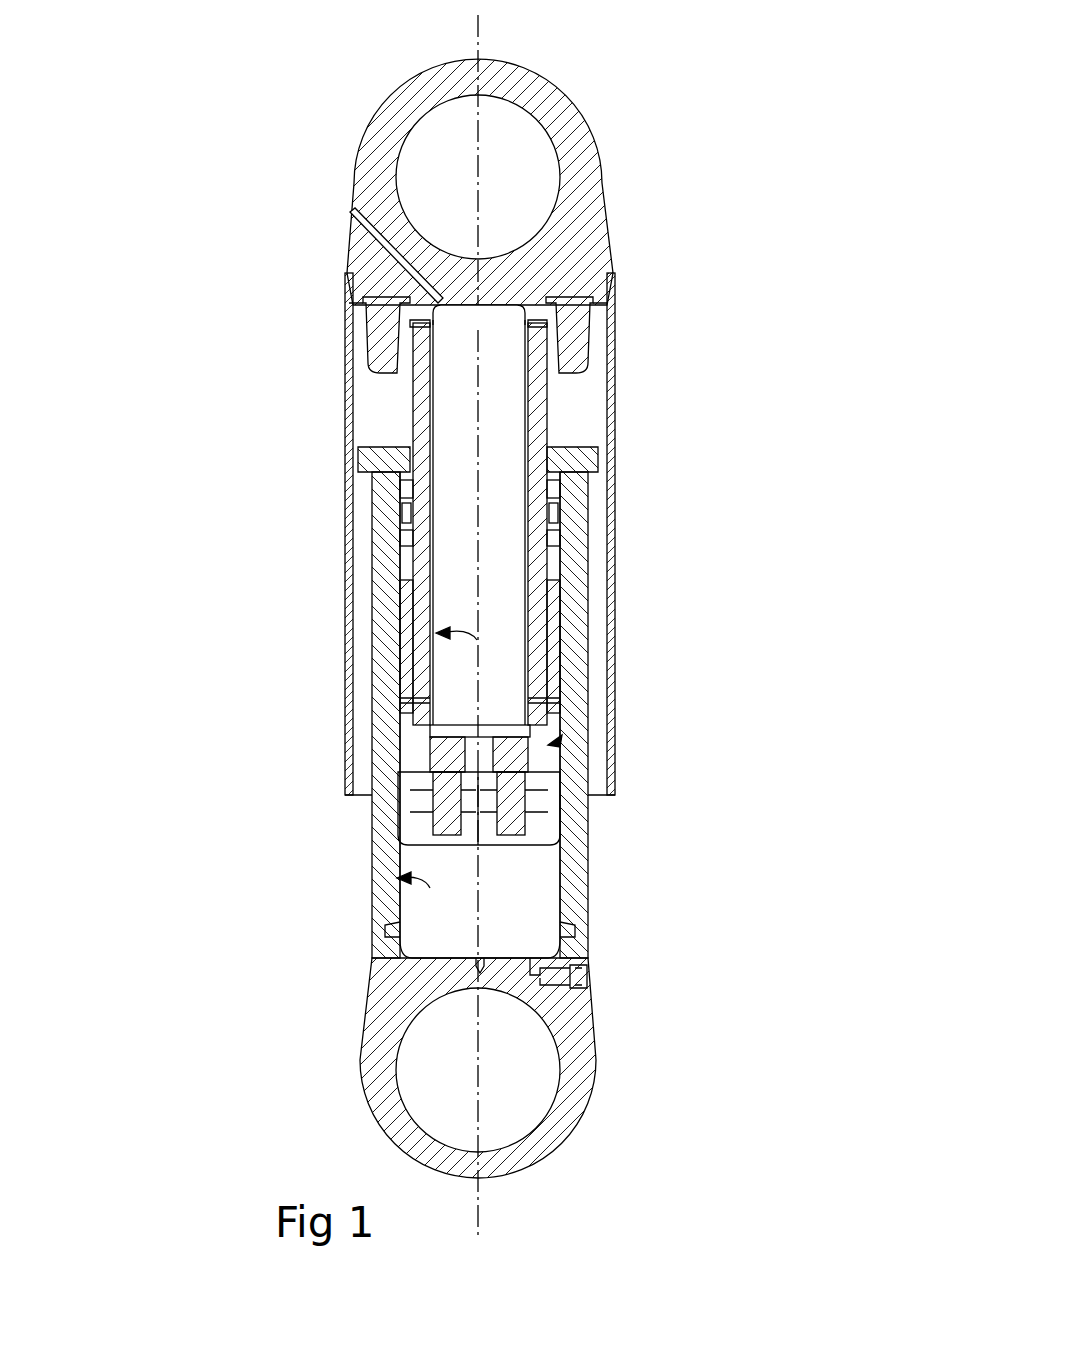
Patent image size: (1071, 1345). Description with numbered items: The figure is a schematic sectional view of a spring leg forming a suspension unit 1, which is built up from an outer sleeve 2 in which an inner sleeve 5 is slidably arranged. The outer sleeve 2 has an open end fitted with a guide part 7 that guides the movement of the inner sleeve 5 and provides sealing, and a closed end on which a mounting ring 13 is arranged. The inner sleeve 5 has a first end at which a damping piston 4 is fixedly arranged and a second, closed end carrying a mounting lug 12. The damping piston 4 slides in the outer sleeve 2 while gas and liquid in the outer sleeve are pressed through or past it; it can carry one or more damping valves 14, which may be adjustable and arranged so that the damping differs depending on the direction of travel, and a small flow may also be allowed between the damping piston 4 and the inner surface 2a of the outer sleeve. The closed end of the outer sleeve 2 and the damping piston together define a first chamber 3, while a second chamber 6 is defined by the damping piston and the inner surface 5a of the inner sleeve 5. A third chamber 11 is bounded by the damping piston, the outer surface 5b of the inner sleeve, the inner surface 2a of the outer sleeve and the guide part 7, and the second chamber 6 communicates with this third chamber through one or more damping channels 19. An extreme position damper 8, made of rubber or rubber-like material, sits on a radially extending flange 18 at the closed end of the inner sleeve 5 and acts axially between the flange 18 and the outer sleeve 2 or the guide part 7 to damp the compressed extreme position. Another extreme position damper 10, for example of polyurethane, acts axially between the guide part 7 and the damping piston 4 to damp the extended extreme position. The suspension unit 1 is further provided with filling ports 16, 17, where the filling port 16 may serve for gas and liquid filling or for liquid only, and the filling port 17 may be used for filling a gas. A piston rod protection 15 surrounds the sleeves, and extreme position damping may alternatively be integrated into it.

The suspension unit 1 is at (238, 167).
The outer sleeve 2 is at (577, 878).
The inner surface of the outer sleeve 2a is at (430, 888).
The first chamber 3 is at (422, 925).
The damping piston 4 is at (408, 798).
The inner sleeve 5 is at (543, 417).
The inner surface of the inner sleeve 5a is at (477, 640).
The outer surface of the inner sleeve 5b is at (555, 742).
The second chamber 6 is at (450, 405).
The guide part 7 is at (390, 530).
The extreme position damper 8 is at (577, 348).
The extreme position damper 10 is at (560, 618).
The third chamber 11 is at (400, 730).
The mounting lug 12 is at (573, 142).
The mounting ring 13 is at (583, 1068).
The damping valve 14 is at (520, 795).
The piston rod protection 15 is at (345, 405).
The filling port 16 is at (588, 975).
The filling port 17 is at (345, 263).
The radially extending flange 18 is at (573, 278).
The damping channel 19 is at (543, 700).